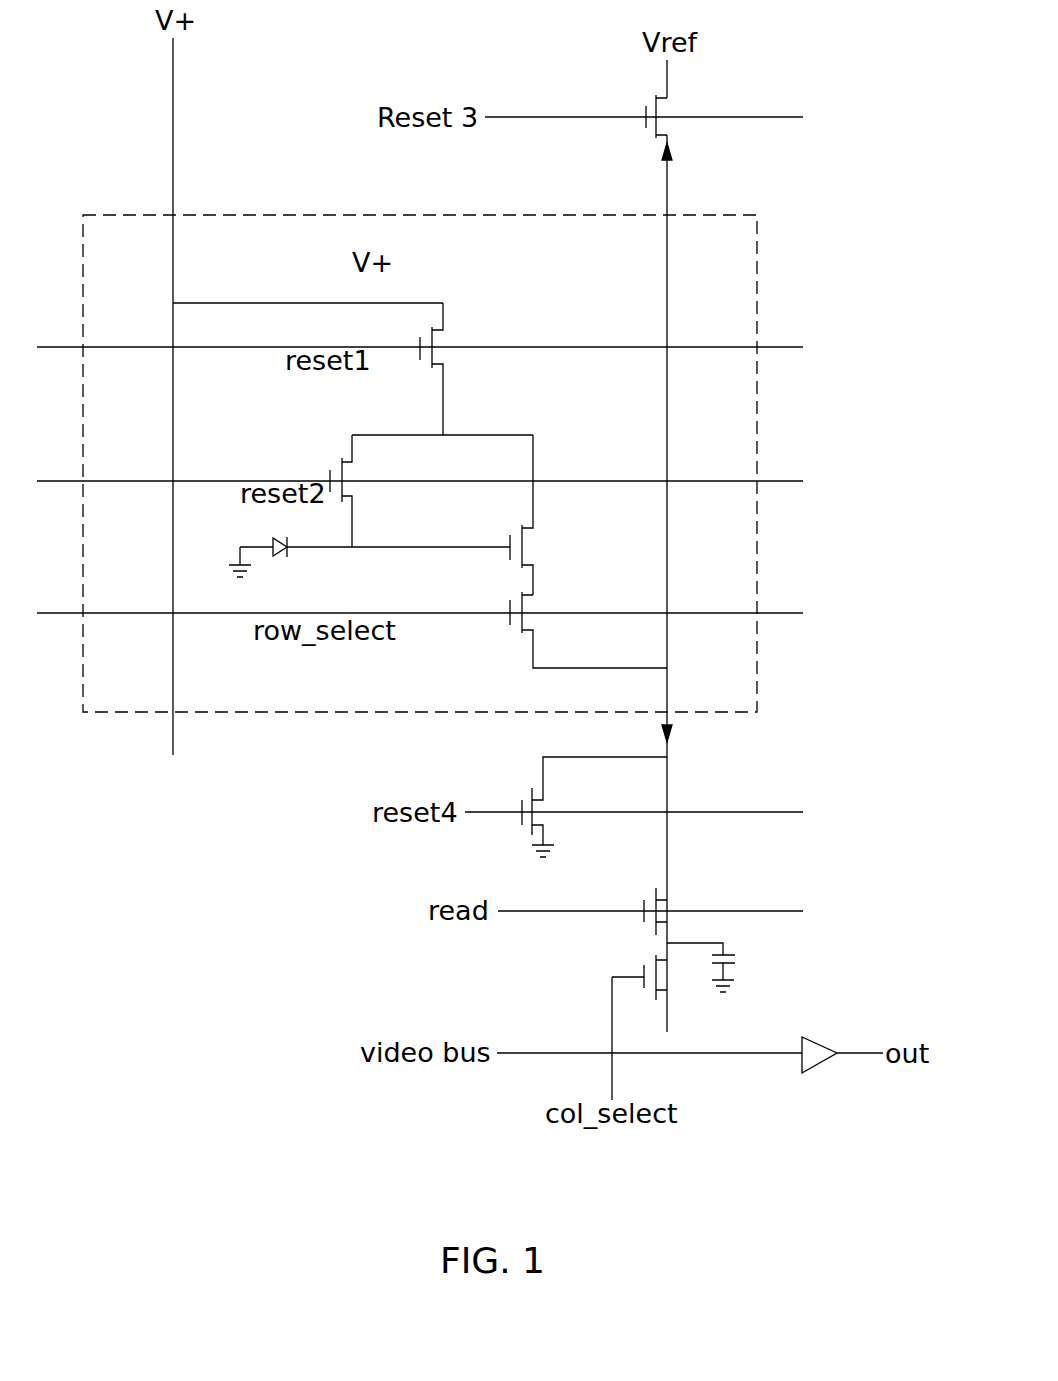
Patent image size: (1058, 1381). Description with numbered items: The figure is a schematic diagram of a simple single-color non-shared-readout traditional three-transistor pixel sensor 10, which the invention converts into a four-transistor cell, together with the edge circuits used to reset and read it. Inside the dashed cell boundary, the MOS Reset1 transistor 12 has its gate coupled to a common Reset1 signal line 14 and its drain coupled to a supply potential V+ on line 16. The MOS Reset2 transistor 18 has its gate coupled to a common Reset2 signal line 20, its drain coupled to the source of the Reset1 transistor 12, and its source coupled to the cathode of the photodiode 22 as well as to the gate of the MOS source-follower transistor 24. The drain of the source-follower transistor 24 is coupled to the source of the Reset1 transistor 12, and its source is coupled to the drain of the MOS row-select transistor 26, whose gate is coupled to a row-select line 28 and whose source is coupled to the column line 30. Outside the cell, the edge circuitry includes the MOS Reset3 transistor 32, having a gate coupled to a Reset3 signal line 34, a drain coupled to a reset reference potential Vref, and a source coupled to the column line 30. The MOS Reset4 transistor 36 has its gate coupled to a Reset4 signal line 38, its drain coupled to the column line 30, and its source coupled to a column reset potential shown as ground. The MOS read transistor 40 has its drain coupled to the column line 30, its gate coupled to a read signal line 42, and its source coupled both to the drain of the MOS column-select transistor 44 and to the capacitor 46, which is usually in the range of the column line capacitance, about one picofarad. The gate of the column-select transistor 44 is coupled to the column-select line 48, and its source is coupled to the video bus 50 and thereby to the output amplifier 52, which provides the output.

The pixel sensor 10 is at (762, 250).
The MOS Reset1 transistor 12 is at (447, 343).
The Reset1 signal line 14 is at (228, 352).
The supply potential line 16 is at (177, 122).
The MOS Reset2 transistor 18 is at (352, 483).
The Reset2 signal line 20 is at (215, 487).
The photodiode 22 is at (292, 553).
The MOS source-follower transistor 24 is at (530, 548).
The MOS row-select transistor 26 is at (530, 620).
The row-select line 28 is at (240, 617).
The column line 30 is at (668, 437).
The MOS Reset3 transistor 32 is at (640, 124).
The Reset3 signal line 34 is at (590, 113).
The MOS Reset4 transistor 36 is at (535, 785).
The Reset4 signal line 38 is at (488, 805).
The MOS read transistor 40 is at (637, 917).
The read signal line 42 is at (555, 905).
The MOS column-select transistor 44 is at (630, 968).
The capacitor 46 is at (733, 947).
The column-select line 48 is at (607, 1082).
The video bus 50 is at (766, 1060).
The output amplifier 52 is at (820, 1032).